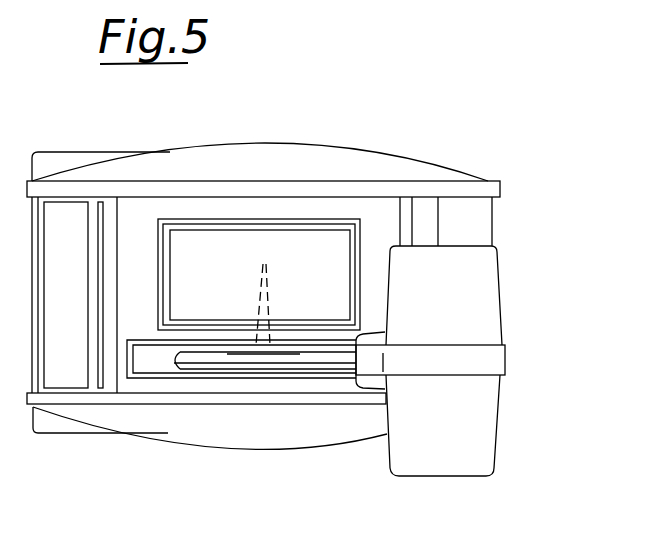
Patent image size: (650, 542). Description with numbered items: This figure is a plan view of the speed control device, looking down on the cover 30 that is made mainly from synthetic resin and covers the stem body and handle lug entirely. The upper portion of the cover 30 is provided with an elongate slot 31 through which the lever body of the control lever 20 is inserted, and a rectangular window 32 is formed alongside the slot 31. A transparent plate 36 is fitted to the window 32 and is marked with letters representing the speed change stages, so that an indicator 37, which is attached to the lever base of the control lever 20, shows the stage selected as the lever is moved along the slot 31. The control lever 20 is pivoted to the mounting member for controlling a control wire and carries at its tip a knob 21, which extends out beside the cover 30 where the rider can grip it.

The control lever 20 is at (287, 360).
The knob 21 is at (487, 454).
The cover 30 is at (441, 162).
The elongate slot 31 is at (204, 368).
The rectangular window 32 is at (230, 235).
The transparent plate 36 is at (317, 267).
The indicator 37 is at (258, 346).